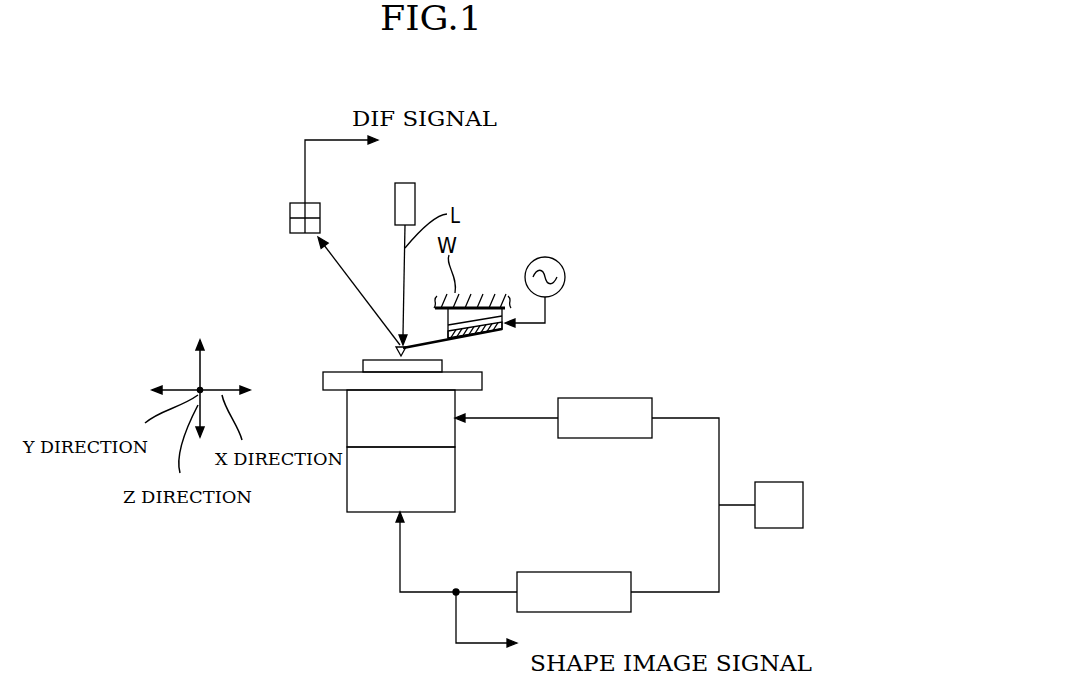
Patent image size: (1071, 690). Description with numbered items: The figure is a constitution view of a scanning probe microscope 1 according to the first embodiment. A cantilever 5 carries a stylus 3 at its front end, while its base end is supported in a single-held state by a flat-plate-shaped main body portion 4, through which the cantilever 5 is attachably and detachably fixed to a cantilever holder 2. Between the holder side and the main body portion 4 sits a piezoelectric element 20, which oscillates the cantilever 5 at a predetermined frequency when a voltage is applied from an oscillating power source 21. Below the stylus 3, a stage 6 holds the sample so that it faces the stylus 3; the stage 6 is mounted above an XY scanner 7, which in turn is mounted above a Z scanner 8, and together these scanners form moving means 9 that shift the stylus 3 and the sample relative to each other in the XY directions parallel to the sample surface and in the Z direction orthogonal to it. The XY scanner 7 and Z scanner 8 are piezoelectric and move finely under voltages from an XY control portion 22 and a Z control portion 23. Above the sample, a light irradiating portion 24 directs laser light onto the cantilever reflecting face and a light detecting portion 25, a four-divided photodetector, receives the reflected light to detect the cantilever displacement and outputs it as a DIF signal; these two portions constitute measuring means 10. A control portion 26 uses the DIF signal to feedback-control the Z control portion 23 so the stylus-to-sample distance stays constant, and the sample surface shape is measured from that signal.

The scanning probe microscope 1 is at (718, 172).
The cantilever holder 2 is at (483, 306).
The stylus 3 is at (397, 349).
The main body portion 4 is at (504, 327).
The cantilever 5 is at (435, 344).
The stage 6 is at (328, 382).
The XY scanner 7 is at (355, 421).
The Z scanner 8 is at (355, 483).
The moving means 9 is at (299, 530).
The measuring means 10 is at (476, 185).
The piezoelectric element 20 is at (487, 330).
The oscillating power source 21 is at (566, 272).
The XY control portion 22 is at (640, 407).
The Z control portion 23 is at (624, 603).
The light irradiating portion 24 is at (396, 205).
The light detecting portion 25 is at (297, 234).
The control portion 26 is at (797, 503).